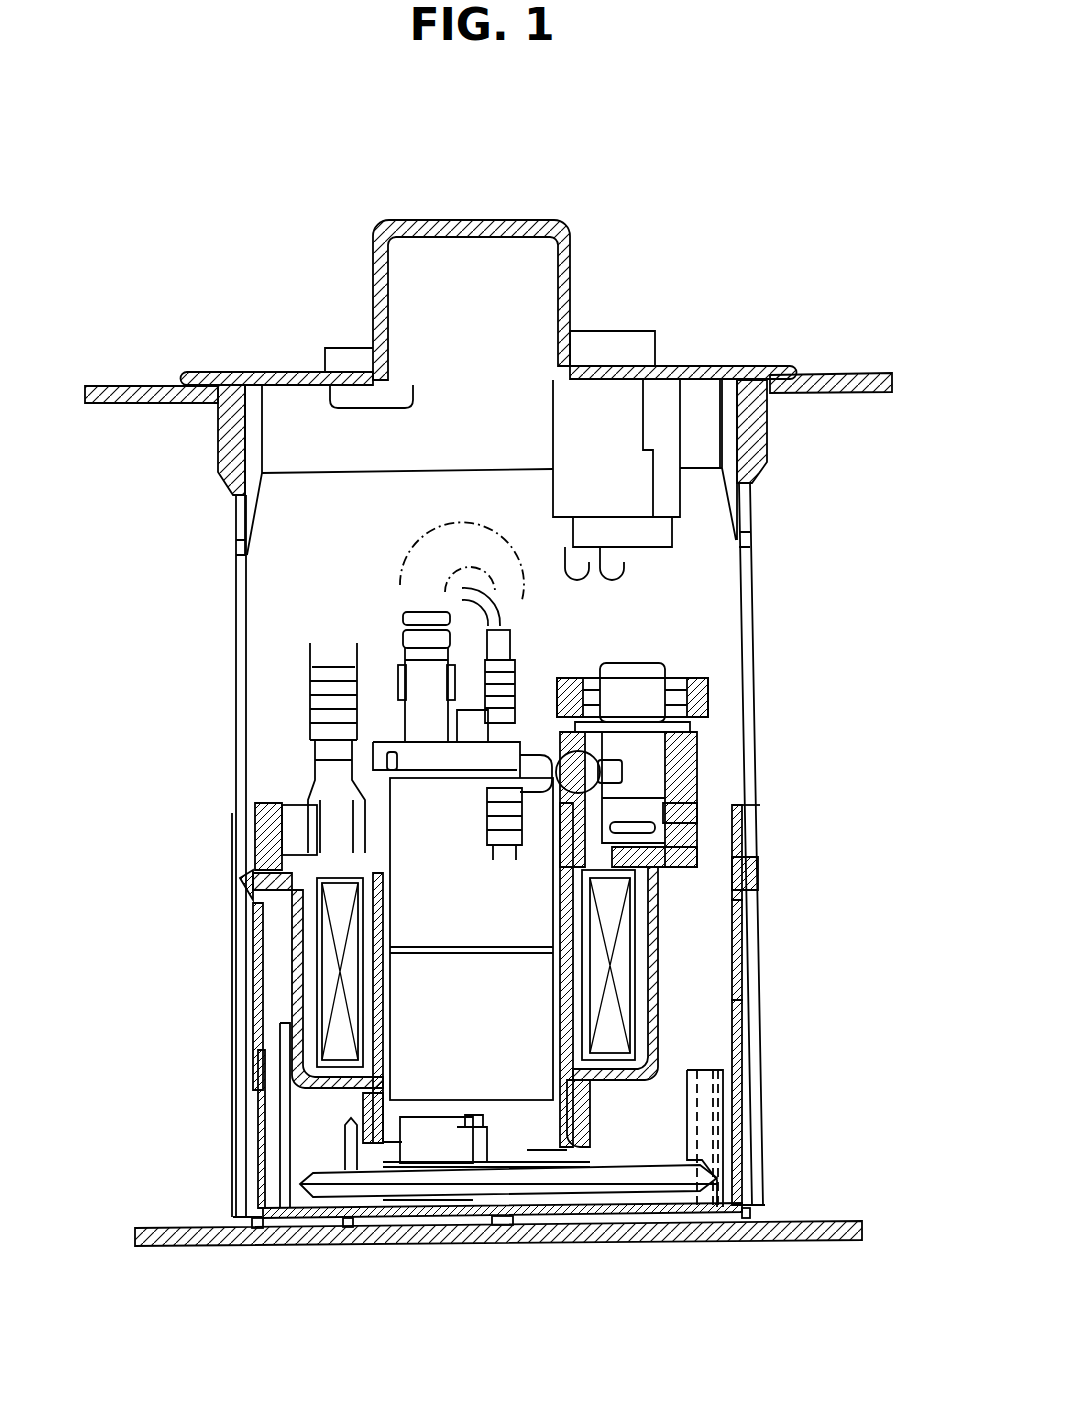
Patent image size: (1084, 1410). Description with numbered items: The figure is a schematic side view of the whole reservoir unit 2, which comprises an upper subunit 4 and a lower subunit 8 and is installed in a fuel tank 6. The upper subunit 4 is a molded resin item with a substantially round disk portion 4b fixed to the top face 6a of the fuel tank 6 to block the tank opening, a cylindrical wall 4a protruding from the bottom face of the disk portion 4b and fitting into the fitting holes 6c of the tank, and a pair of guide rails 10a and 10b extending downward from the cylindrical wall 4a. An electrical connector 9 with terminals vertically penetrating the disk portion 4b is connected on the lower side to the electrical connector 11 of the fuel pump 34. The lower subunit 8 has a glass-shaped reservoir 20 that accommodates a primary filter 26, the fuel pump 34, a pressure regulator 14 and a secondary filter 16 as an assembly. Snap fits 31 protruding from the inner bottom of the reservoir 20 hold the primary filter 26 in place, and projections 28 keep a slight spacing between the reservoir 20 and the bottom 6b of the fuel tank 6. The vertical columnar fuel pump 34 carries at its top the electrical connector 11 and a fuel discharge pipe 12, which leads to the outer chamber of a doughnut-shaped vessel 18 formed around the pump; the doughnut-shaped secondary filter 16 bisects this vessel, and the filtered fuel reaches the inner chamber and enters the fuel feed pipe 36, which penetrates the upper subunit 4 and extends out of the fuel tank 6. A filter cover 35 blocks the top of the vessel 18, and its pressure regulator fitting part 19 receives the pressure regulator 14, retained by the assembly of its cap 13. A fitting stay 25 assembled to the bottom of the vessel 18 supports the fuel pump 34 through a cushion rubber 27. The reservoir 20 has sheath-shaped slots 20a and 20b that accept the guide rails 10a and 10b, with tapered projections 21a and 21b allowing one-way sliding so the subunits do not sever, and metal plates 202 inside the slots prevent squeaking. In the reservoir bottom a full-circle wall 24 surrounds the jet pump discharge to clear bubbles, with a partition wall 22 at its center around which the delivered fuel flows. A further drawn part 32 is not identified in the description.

The reservoir unit 2 is at (603, 251).
The upper subunit 4 is at (680, 337).
The cylindrical wall 4a is at (753, 435).
The disk portion 4b is at (303, 372).
The fuel tank 6 is at (830, 354).
The top face 6a is at (855, 373).
The bottom 6b is at (773, 1234).
The fitting holes 6c is at (237, 372).
The lower subunit 8 is at (787, 805).
The electrical connector 9 is at (660, 488).
The guide rail 10a is at (752, 617).
The guide rail 10b is at (236, 640).
The electrical connector 11 is at (470, 612).
The fuel discharge pipe 12 is at (560, 600).
The cap 13 is at (515, 650).
The pressure regulator 14 is at (653, 772).
The secondary filter 16 is at (622, 958).
The doughnut-shaped vessel 18 is at (657, 1020).
The pressure regulator fitting part 19 is at (680, 855).
The reservoir 20 is at (760, 1100).
The sheath-shaped slot 20a is at (750, 862).
The sheath-shaped slot 20b is at (250, 870).
The tapered projection 21a is at (742, 887).
The tapered projection 21b is at (250, 895).
The metal plates 202 is at (748, 925).
The partition wall 22 is at (760, 1118).
The wall 24 is at (697, 1138).
The fitting stay 25 is at (587, 1147).
The primary filter 26 is at (535, 1187).
The cushion rubber 27 is at (395, 1142).
The projections 28 is at (370, 1220).
The snap fits 31 is at (342, 1203).
The support bracket 32 is at (280, 1048).
The fuel pump 34 is at (417, 1003).
The filter cover 35 is at (297, 857).
The fuel feed pipe 36 is at (310, 708).